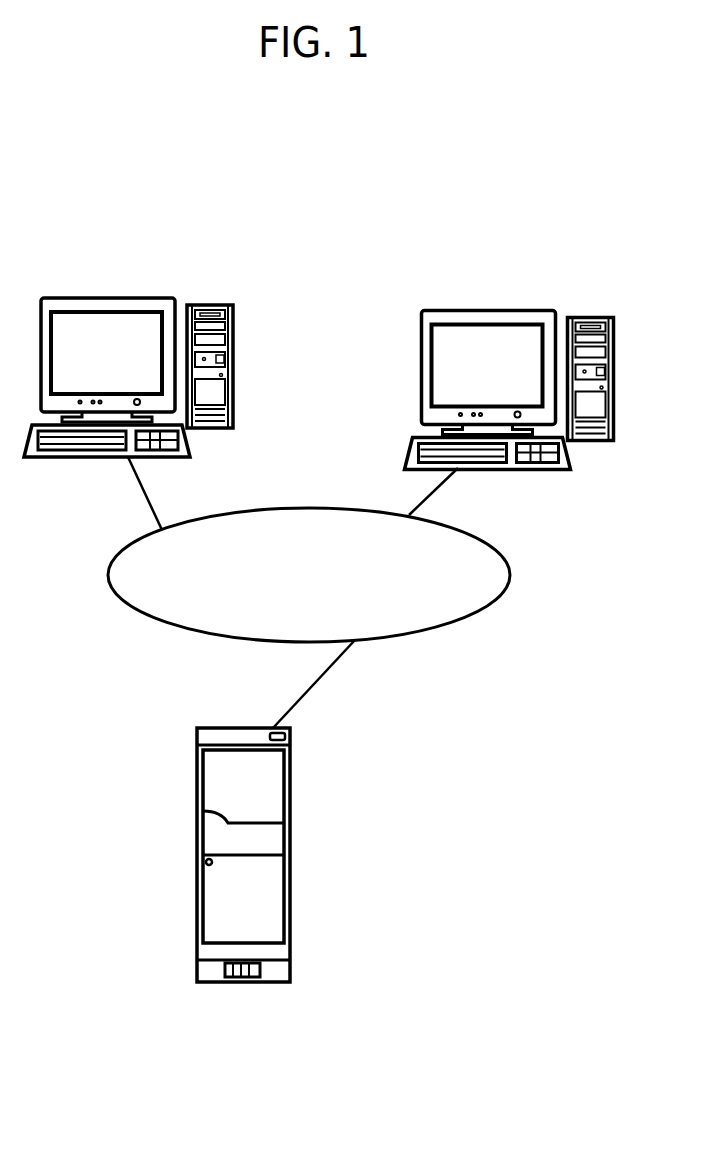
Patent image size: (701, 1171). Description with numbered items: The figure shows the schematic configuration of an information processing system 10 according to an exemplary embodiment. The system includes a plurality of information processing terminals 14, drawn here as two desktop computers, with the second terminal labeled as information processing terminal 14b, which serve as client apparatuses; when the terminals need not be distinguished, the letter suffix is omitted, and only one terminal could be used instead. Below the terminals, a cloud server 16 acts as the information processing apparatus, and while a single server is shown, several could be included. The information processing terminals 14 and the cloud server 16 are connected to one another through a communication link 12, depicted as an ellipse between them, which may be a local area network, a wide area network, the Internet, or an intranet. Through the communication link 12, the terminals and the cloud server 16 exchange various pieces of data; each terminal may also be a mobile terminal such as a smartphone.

The information processing system 10 is at (436, 202).
The information processing terminal 14 is at (110, 300).
The information processing terminal 14b is at (523, 313).
The communication link 12 is at (505, 557).
The cloud server 16 is at (252, 740).